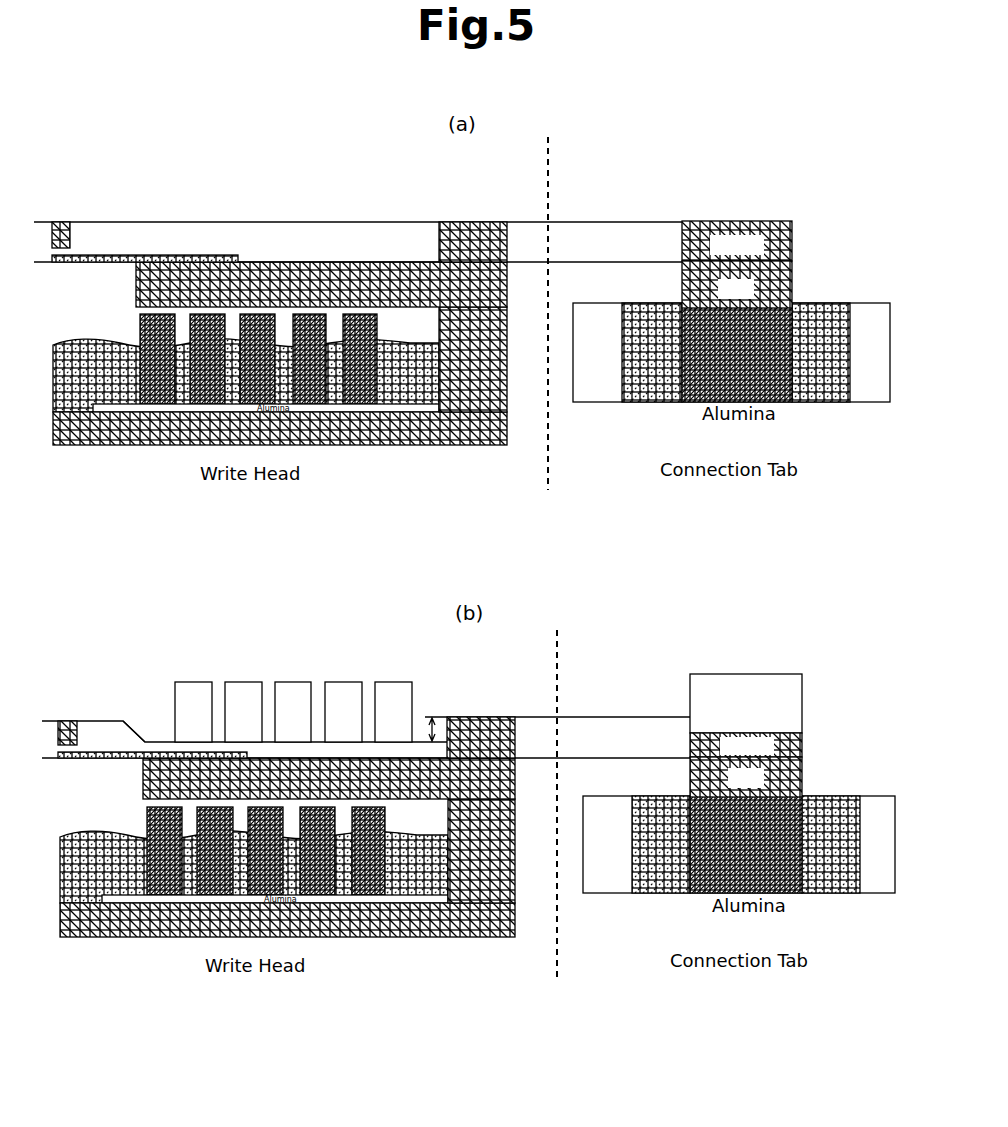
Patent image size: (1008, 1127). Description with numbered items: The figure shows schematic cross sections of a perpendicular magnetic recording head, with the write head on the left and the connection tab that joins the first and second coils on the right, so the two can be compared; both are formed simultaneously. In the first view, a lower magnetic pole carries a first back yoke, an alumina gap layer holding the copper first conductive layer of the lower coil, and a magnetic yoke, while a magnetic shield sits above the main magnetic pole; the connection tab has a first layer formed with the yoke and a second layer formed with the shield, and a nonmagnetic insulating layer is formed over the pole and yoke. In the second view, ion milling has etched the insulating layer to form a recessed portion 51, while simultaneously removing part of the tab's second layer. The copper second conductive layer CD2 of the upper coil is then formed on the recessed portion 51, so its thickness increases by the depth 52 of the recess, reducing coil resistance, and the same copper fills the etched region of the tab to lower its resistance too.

The recessed portion 51 is at (160, 742).
The depth of the recessed portion 52 is at (433, 717).
The second conductive layer CD2 is at (488, 697).